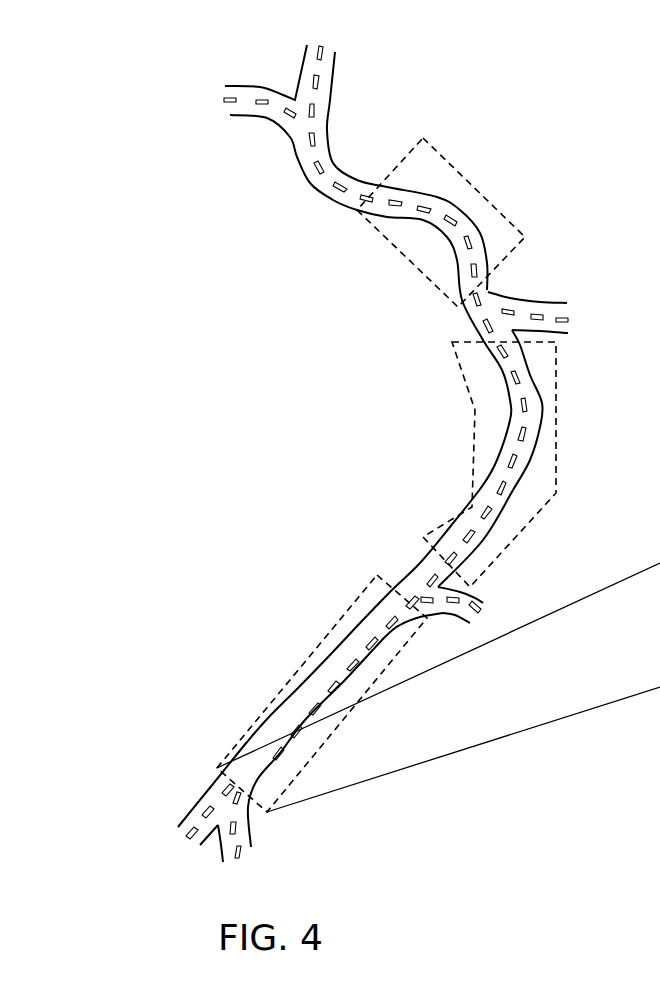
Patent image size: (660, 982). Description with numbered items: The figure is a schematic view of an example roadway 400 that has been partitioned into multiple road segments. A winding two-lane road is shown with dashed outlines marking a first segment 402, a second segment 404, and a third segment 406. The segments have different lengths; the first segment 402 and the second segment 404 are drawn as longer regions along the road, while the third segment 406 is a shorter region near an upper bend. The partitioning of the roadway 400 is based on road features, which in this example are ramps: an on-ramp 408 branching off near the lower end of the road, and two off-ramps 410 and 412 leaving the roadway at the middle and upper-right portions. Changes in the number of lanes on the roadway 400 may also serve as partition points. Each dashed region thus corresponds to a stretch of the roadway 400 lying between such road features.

The roadway 400 is at (173, 66).
The first segment 402 is at (337, 623).
The second segment 404 is at (440, 518).
The third segment 406 is at (455, 302).
The on-ramp 408 is at (252, 840).
The off-ramp 410 is at (470, 628).
The off-ramp 412 is at (530, 295).